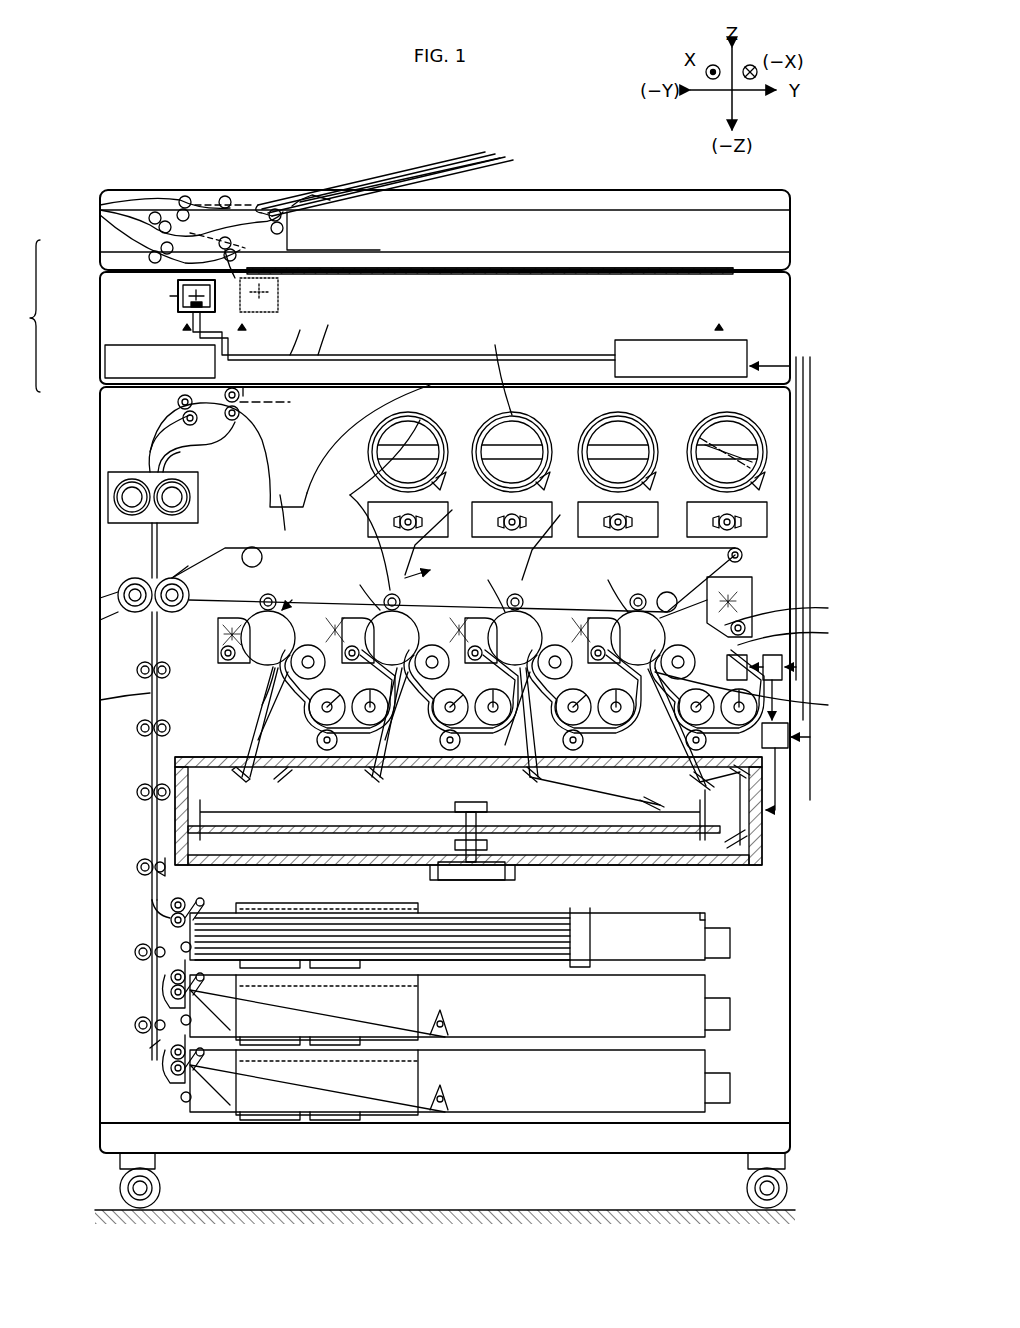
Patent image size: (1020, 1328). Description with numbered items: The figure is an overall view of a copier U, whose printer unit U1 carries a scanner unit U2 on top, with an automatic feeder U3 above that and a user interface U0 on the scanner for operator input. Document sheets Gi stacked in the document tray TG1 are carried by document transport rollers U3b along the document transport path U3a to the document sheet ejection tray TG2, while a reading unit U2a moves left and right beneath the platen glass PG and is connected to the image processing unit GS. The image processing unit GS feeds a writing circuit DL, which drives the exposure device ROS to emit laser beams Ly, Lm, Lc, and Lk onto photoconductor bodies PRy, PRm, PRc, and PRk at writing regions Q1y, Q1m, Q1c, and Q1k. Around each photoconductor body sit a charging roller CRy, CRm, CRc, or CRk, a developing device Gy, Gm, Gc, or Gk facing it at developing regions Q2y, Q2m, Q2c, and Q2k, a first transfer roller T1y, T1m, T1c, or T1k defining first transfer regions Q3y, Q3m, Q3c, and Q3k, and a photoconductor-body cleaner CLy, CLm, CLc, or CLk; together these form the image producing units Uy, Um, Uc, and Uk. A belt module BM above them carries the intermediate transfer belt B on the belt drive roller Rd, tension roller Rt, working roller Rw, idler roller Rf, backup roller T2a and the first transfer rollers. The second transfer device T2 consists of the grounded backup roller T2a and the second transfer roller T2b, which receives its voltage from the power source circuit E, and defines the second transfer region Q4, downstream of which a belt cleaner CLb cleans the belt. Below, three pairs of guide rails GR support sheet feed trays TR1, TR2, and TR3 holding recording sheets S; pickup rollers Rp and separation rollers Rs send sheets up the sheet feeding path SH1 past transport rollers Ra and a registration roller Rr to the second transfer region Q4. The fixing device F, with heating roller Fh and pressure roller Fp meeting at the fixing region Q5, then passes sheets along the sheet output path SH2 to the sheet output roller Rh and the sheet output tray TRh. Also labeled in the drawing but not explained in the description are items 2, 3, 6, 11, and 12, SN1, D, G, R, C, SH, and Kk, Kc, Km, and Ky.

The copier U is at (26, 316).
The printer unit U1 is at (112, 396).
The scanner unit U2 is at (112, 290).
The automatic feeder U3 is at (112, 248).
The document transport path U3a is at (200, 195).
The document transport rollers U3b is at (112, 210).
The user interface U0 is at (148, 335).
The reading unit U2a is at (170, 298).
The document sheets Gi is at (385, 158).
The document tray TG1 is at (480, 160).
The document sheet ejection tray TG2 is at (492, 252).
The platen glass 3 is at (622, 270).
The platen glass PG is at (360, 272).
The imaging sensor SN1 is at (333, 222).
The transport roller 12 is at (225, 258).
The transport roller 6 is at (240, 268).
The imaging unit 11 is at (180, 284).
The imaging unit position 2 is at (250, 281).
The intermediate transfer belt B is at (252, 355).
The green light G is at (294, 332).
The red light R is at (324, 329).
The image processing unit GS is at (750, 350).
The black toner cartridge Kk is at (405, 420).
The cyan toner cartridge Kc is at (520, 420).
The magenta toner cartridge Km is at (600, 420).
The yellow toner cartridge Ky is at (748, 432).
The first transfer region Q3m is at (487, 367).
The first transfer region Q3c is at (372, 505).
The first transfer region Q3k is at (286, 588).
The first transfer region Q3y is at (795, 610).
The image producing unit Uc is at (467, 480).
The image producing unit Um is at (571, 480).
The image producing unit Uy is at (679, 480).
The image producing unit Uk is at (300, 582).
The sheet output path SH2 is at (170, 440).
The sheet output tray TRh is at (345, 425).
The sheet output roller Rh is at (232, 422).
The belt module BM is at (310, 490).
The fixing device F is at (178, 472).
The pressure roller Fp is at (132, 480).
The heating roller Fh is at (185, 488).
The guide D is at (164, 443).
The fixing region Q5 is at (148, 523).
The second transfer device T2 is at (118, 600).
The backup roller T2a is at (168, 580).
The second transfer roller T2b is at (100, 592).
The tension roller Rt is at (220, 548).
The working roller Rw is at (252, 547).
The belt drive roller Rd is at (742, 555).
The idler roller Rf is at (672, 594).
The first transfer roller T1k is at (260, 602).
The first transfer roller T1c is at (392, 594).
The first transfer roller T1m is at (514, 594).
The first transfer roller T1y is at (637, 594).
The photoconductor body PRk is at (262, 665).
The photoconductor body PRc is at (359, 586).
The photoconductor body PRm is at (481, 577).
The photoconductor body PRy is at (614, 577).
The photoconductor-body cleaner CLk is at (218, 632).
The photoconductor-body cleaner CLc is at (345, 620).
The photoconductor-body cleaner CLm is at (468, 615).
The photoconductor-body cleaner CLy is at (600, 615).
The belt cleaner CLb is at (752, 585).
The charging roller CRk is at (218, 653).
The charging roller CRc is at (340, 640).
The charging roller CRm is at (480, 665).
The charging roller CRy is at (605, 660).
The developing device Gk is at (337, 697).
The developing device Gc is at (461, 697).
The developing device Gm is at (584, 697).
The developing device Gy is at (707, 697).
The writing region Q1k is at (245, 693).
The writing region Q1c is at (379, 714).
The writing region Q1m is at (504, 714).
The writing region Q1y is at (760, 693).
The developing region Q2k is at (261, 709).
The developing region Q2c is at (433, 559).
The developing region Q2m is at (528, 590).
The developing region Q2y is at (801, 632).
The second transfer region Q4 is at (122, 675).
The power source circuit E is at (747, 660).
The controller C is at (782, 672).
The writing circuit DL is at (788, 745).
The registration roller Rr is at (135, 670).
The sheet feeding path SH1 is at (97, 693).
The exposure device ROS is at (222, 757).
The laser beam Lk is at (280, 778).
The laser beam Lc is at (384, 782).
The laser beam Lm is at (540, 783).
The laser beam Ly is at (768, 808).
The transport rollers Ra is at (138, 792).
The pickup rollers Rp is at (205, 898).
The separation rollers Rs is at (165, 918).
The recording sheets S is at (312, 905).
The sheet feed tray TR1 is at (720, 940).
The sheet feed tray TR2 is at (445, 995).
The sheet feed tray TR3 is at (445, 1072).
The guide rails GR is at (165, 968).
The sheet transport path SH is at (150, 1045).